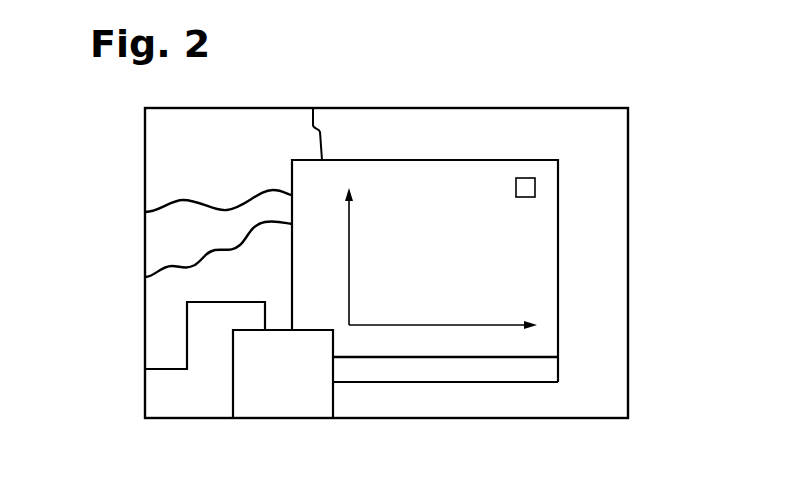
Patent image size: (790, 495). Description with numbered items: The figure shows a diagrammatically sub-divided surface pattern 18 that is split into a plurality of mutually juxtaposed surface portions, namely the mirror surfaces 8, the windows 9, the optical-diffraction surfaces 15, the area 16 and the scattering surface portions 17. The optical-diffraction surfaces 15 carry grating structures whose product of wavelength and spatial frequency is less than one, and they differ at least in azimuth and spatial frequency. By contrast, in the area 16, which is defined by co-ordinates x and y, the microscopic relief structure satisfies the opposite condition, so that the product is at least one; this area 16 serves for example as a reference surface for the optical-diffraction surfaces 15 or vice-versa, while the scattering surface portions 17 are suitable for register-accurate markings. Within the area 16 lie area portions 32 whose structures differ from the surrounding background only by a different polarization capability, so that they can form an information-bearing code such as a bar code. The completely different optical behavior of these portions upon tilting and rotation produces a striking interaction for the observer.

The surface pattern 18 is at (629, 142).
The scattering surface portions 17 is at (165, 156).
The area 16 is at (525, 250).
The area portions 32 is at (528, 185).
The mirror surfaces 8 is at (165, 242).
The optical-diffraction surfaces 15 is at (260, 399).
The windows 9 is at (378, 367).